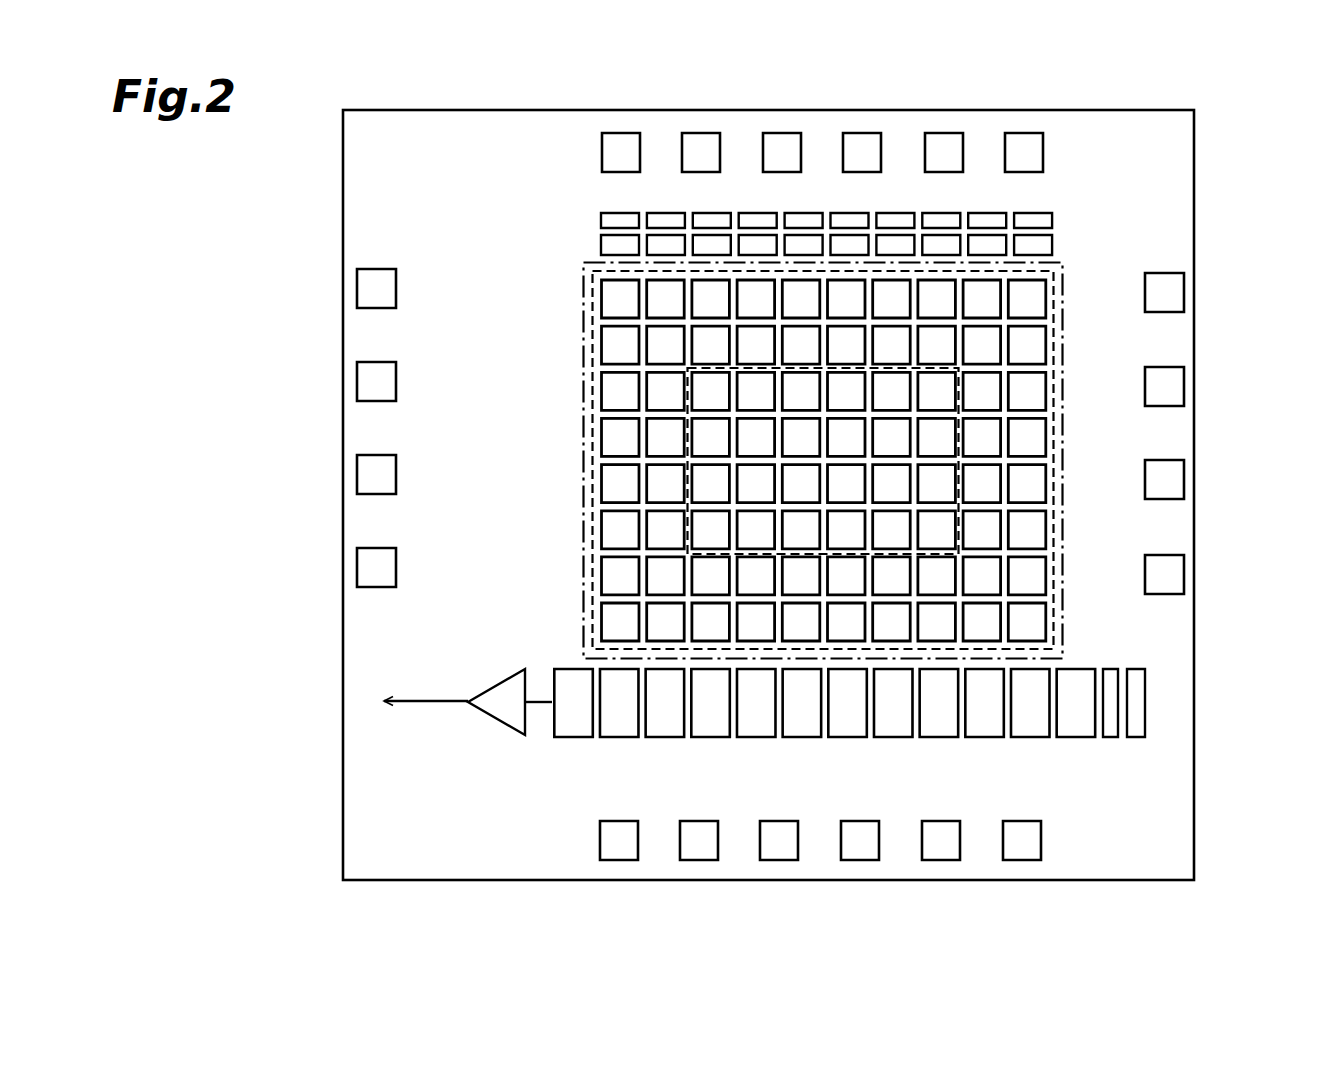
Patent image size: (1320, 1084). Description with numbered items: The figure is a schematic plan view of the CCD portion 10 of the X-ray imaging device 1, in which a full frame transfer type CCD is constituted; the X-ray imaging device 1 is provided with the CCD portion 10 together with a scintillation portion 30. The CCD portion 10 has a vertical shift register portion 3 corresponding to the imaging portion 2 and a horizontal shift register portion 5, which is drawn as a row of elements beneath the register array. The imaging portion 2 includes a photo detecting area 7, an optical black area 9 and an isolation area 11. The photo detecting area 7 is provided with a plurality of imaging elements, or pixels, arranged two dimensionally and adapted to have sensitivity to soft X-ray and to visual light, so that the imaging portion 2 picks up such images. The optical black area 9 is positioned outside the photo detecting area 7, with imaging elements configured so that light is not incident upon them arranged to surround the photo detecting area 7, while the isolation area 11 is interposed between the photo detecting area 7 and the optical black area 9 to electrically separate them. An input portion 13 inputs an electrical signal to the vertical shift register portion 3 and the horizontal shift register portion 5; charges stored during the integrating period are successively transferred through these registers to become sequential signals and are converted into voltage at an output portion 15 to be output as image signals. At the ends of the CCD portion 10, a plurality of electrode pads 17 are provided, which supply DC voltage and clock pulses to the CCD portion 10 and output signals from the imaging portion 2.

The X-ray imaging device 1 is at (1256, 139).
The imaging portion 2 is at (1056, 347).
The vertical shift register portion 3 is at (814, 447).
The horizontal shift register portion 5 is at (847, 747).
The photo detecting area 7 is at (962, 388).
The optical black area 9 is at (601, 487).
The CCD portion 10 is at (1194, 762).
The isolation area 11 is at (607, 443).
The input portion 13 is at (605, 207).
The output portion 15 is at (487, 726).
The electrode pad 17 is at (620, 133).
The scintillation portion 30 is at (1066, 301).